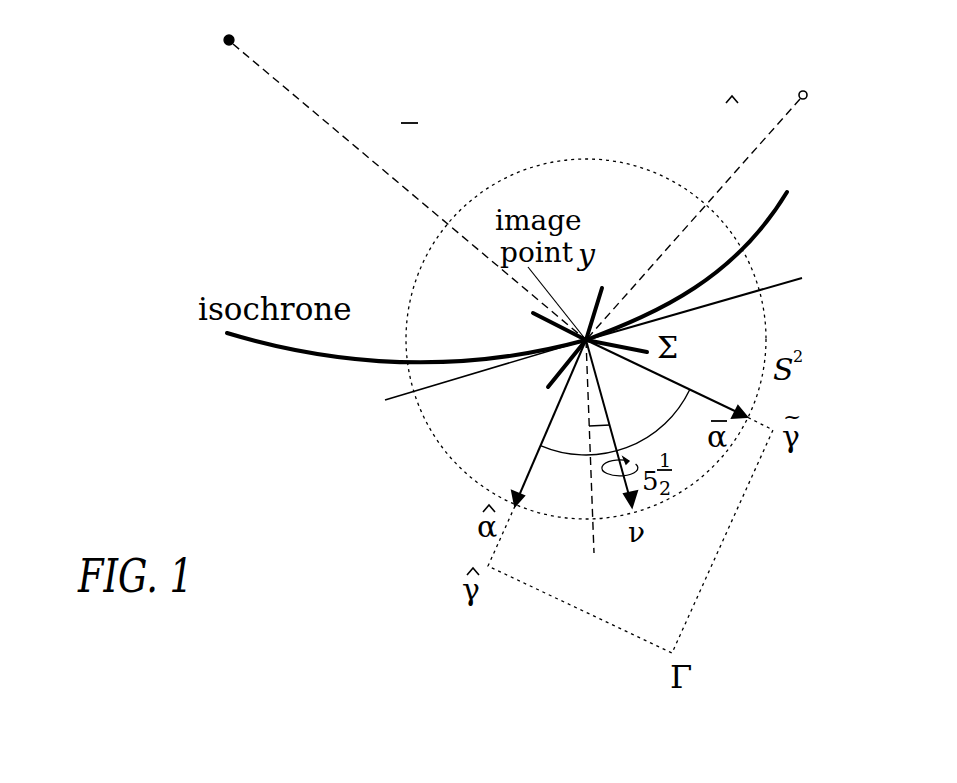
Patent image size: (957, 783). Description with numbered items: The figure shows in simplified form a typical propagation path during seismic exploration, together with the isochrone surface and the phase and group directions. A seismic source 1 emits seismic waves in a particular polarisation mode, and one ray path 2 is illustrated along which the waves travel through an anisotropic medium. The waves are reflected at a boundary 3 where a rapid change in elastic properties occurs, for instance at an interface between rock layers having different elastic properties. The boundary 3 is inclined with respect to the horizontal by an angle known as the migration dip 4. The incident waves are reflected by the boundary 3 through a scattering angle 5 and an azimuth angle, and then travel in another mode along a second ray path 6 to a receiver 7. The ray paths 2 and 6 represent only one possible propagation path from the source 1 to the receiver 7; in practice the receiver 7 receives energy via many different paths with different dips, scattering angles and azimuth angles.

The seismic source 1 is at (218, 22).
The ray path 2 is at (409, 192).
The boundary 3 is at (705, 302).
The migration dip 4 is at (599, 443).
The scattering angle 5 is at (615, 422).
The ray path 6 is at (693, 217).
The receiver 7 is at (818, 79).